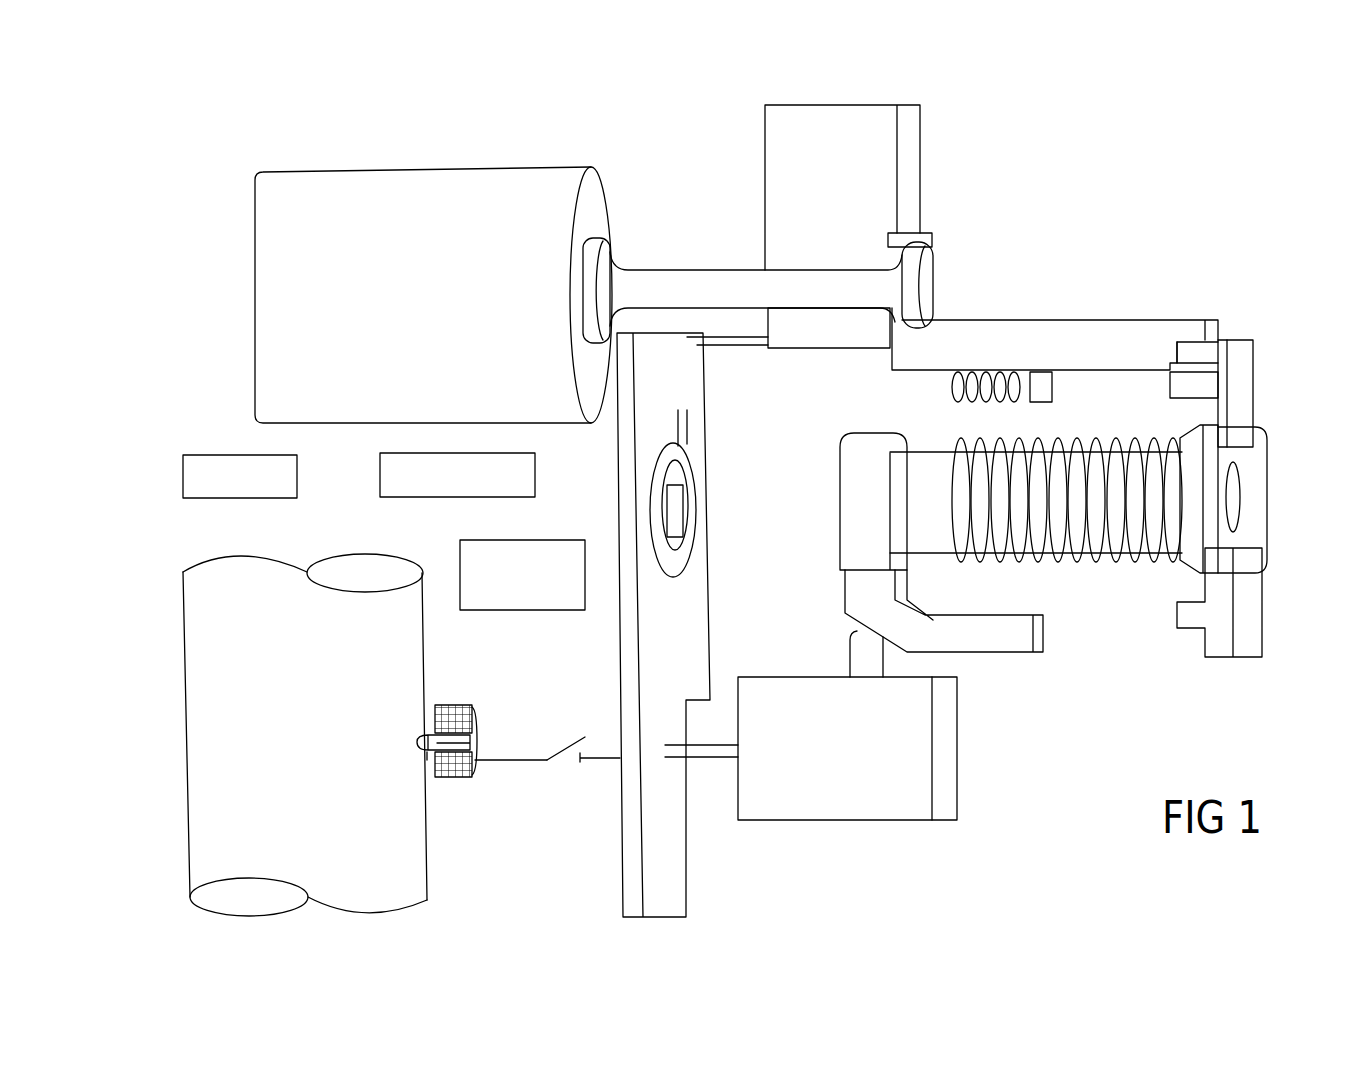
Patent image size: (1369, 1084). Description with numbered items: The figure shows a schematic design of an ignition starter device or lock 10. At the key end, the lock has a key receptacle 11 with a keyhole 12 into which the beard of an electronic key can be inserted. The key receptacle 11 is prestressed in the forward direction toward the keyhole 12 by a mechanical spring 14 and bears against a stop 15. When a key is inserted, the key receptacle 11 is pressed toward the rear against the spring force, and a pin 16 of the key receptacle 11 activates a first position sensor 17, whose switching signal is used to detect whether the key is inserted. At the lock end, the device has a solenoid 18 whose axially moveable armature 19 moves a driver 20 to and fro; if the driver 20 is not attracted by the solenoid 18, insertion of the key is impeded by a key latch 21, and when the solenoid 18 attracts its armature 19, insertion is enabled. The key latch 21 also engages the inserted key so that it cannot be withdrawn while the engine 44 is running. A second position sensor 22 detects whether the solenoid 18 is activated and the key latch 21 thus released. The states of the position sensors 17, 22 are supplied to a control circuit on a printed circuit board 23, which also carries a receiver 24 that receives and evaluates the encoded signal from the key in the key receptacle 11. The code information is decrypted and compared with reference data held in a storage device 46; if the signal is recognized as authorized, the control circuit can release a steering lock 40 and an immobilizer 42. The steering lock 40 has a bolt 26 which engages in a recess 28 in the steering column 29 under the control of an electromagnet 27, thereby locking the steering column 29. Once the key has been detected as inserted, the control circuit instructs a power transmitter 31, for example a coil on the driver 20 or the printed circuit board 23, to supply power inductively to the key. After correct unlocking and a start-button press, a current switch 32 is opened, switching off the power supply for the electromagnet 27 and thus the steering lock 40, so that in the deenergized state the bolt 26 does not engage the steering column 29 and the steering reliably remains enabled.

The ignition starter device 10 is at (1118, 243).
The key receptacle 11 is at (1258, 465).
The keyhole 12 is at (1237, 497).
The mechanical spring 14 is at (1110, 563).
The stop 15 is at (1047, 387).
The pin 16 is at (1005, 645).
The first position sensor 17 is at (830, 790).
The solenoid 18 is at (428, 193).
The armature 19 is at (700, 283).
The driver 20 is at (1034, 340).
The key latch 21 is at (1247, 378).
The second position sensor 22 is at (907, 152).
The printed circuit board 23 is at (692, 635).
The receiver 24 is at (677, 510).
The bolt 26 is at (427, 760).
The electromagnet 27 is at (460, 778).
The recess 28 is at (420, 733).
The steering column 29 is at (208, 752).
The power transmitter 31 is at (692, 487).
The current switch 32 is at (565, 743).
The steering lock 40 is at (480, 903).
The immobilizer 42 is at (408, 502).
The engine 44 is at (197, 452).
The storage device 46 is at (480, 613).